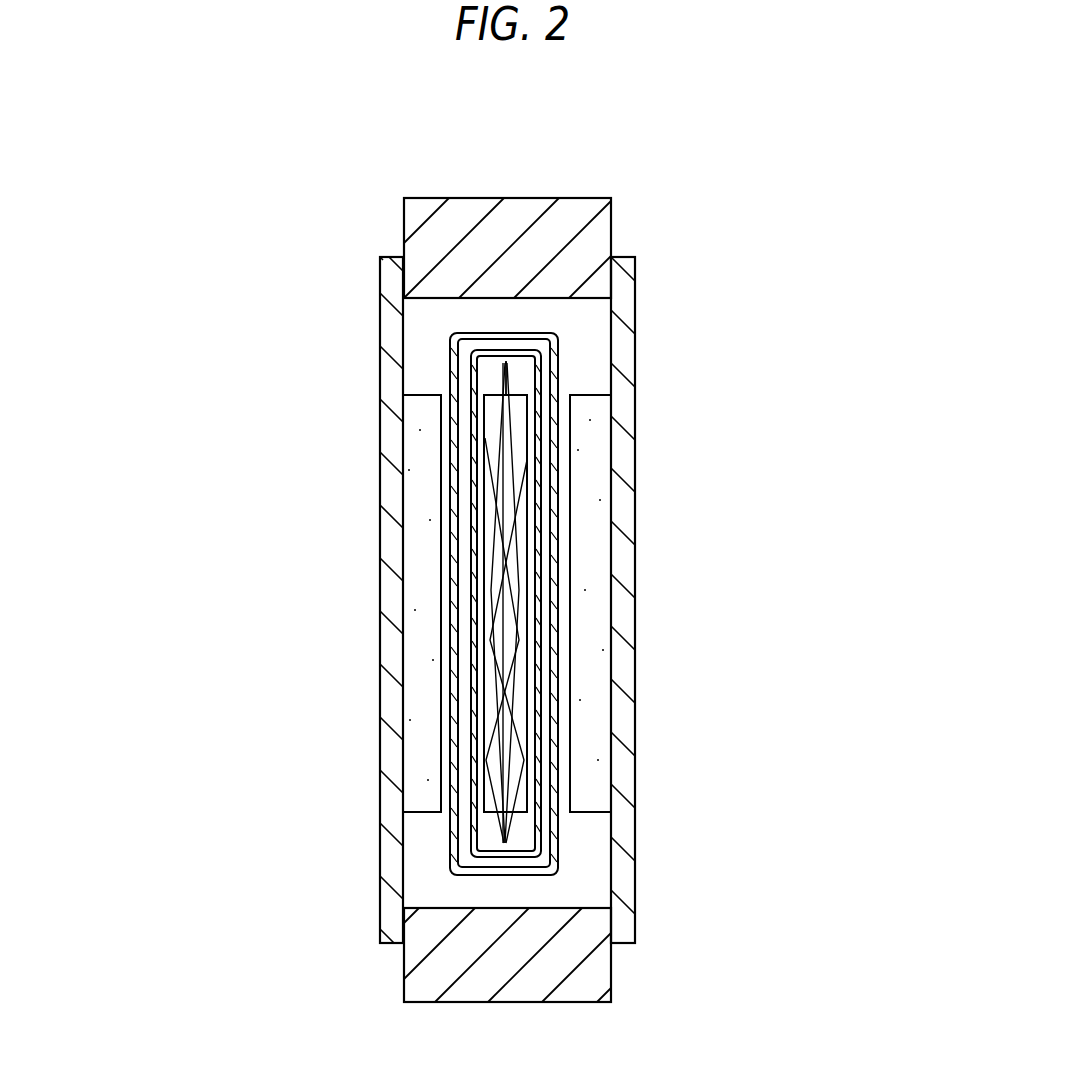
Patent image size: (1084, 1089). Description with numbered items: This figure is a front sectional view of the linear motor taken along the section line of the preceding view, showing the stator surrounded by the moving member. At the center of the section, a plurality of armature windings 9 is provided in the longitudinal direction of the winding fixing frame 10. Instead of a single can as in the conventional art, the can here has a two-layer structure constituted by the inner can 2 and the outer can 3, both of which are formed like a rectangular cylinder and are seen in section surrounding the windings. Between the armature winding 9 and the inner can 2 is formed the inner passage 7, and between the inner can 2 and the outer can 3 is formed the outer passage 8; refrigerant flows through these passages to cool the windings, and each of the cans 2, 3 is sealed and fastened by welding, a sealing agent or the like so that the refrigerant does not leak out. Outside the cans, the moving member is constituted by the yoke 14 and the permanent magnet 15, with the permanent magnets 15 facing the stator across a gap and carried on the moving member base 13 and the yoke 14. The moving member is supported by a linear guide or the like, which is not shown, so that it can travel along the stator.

The inner can 2 is at (473, 503).
The outer can 3 is at (455, 595).
The inner passage 7 is at (487, 380).
The outer passage 8 is at (458, 352).
The armature winding 9 is at (520, 455).
The winding fixing frame 10 is at (510, 375).
The moving member base 13 is at (517, 208).
The yoke 14 is at (388, 848).
The permanent magnet 15 is at (653, 621).